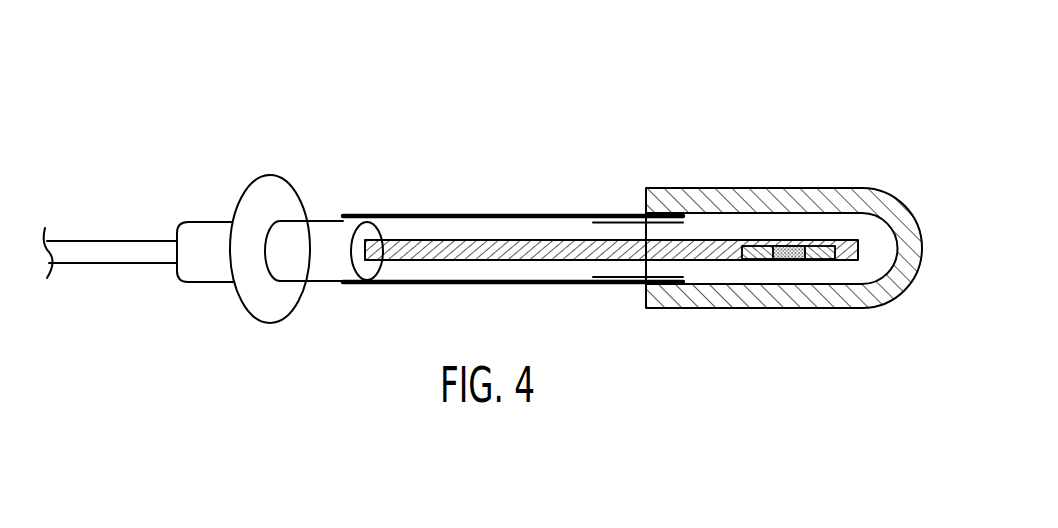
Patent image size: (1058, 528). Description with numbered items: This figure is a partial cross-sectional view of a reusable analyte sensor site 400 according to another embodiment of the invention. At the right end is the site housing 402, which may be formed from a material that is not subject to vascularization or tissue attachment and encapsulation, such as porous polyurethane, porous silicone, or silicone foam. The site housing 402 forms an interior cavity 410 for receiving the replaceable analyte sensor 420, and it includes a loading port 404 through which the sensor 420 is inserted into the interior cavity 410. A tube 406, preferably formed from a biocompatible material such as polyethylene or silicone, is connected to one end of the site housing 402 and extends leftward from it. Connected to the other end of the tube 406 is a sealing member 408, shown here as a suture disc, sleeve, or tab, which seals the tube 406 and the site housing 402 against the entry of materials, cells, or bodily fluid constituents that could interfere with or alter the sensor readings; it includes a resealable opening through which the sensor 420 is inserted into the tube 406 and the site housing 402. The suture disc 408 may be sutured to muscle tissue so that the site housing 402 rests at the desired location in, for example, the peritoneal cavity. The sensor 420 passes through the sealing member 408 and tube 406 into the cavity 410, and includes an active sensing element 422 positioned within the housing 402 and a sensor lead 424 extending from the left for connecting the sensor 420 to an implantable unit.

The sensor site 400 is at (278, 104).
The site housing 402 is at (921, 241).
The loading port 404 is at (616, 218).
The tube 406 is at (428, 214).
The sealing member 408 is at (262, 312).
The interior cavity 410 is at (760, 270).
The replaceable analyte sensor 420 is at (518, 219).
The sensing element 422 is at (791, 226).
The sensor lead 424 is at (108, 240).